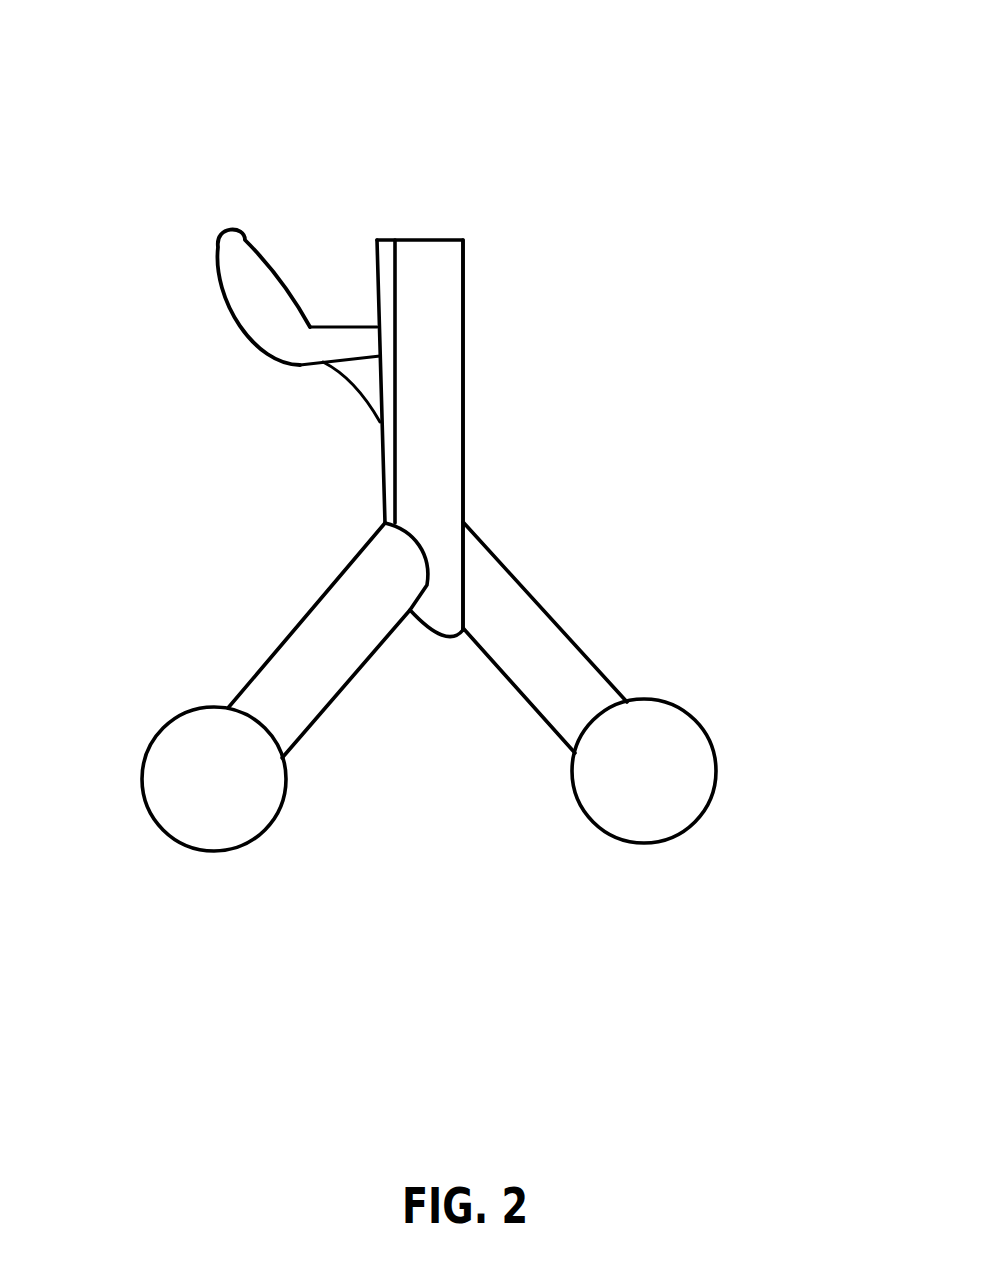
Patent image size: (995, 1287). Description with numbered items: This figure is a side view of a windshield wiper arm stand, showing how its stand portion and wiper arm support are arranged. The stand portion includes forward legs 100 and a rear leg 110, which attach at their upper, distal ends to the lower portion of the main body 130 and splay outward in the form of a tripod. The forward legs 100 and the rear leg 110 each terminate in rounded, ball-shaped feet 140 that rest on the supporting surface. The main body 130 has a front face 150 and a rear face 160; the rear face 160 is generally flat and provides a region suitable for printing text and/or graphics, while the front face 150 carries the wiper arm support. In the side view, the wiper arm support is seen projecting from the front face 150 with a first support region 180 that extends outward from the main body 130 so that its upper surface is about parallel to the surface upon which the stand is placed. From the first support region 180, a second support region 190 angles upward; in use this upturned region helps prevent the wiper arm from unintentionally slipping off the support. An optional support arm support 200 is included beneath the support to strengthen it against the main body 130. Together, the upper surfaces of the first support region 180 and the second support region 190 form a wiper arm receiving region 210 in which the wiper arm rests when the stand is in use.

The forward legs 100 is at (322, 642).
The rear leg 110 is at (572, 665).
The main body 130 is at (448, 255).
The ball-shaped feet 140 is at (257, 807).
The front face 150 is at (377, 265).
The rear face 160 is at (465, 385).
The first support region 180 is at (345, 338).
The second support region 190 is at (257, 290).
The support arm support 200 is at (367, 383).
The wiper arm receiving region 210 is at (345, 323).